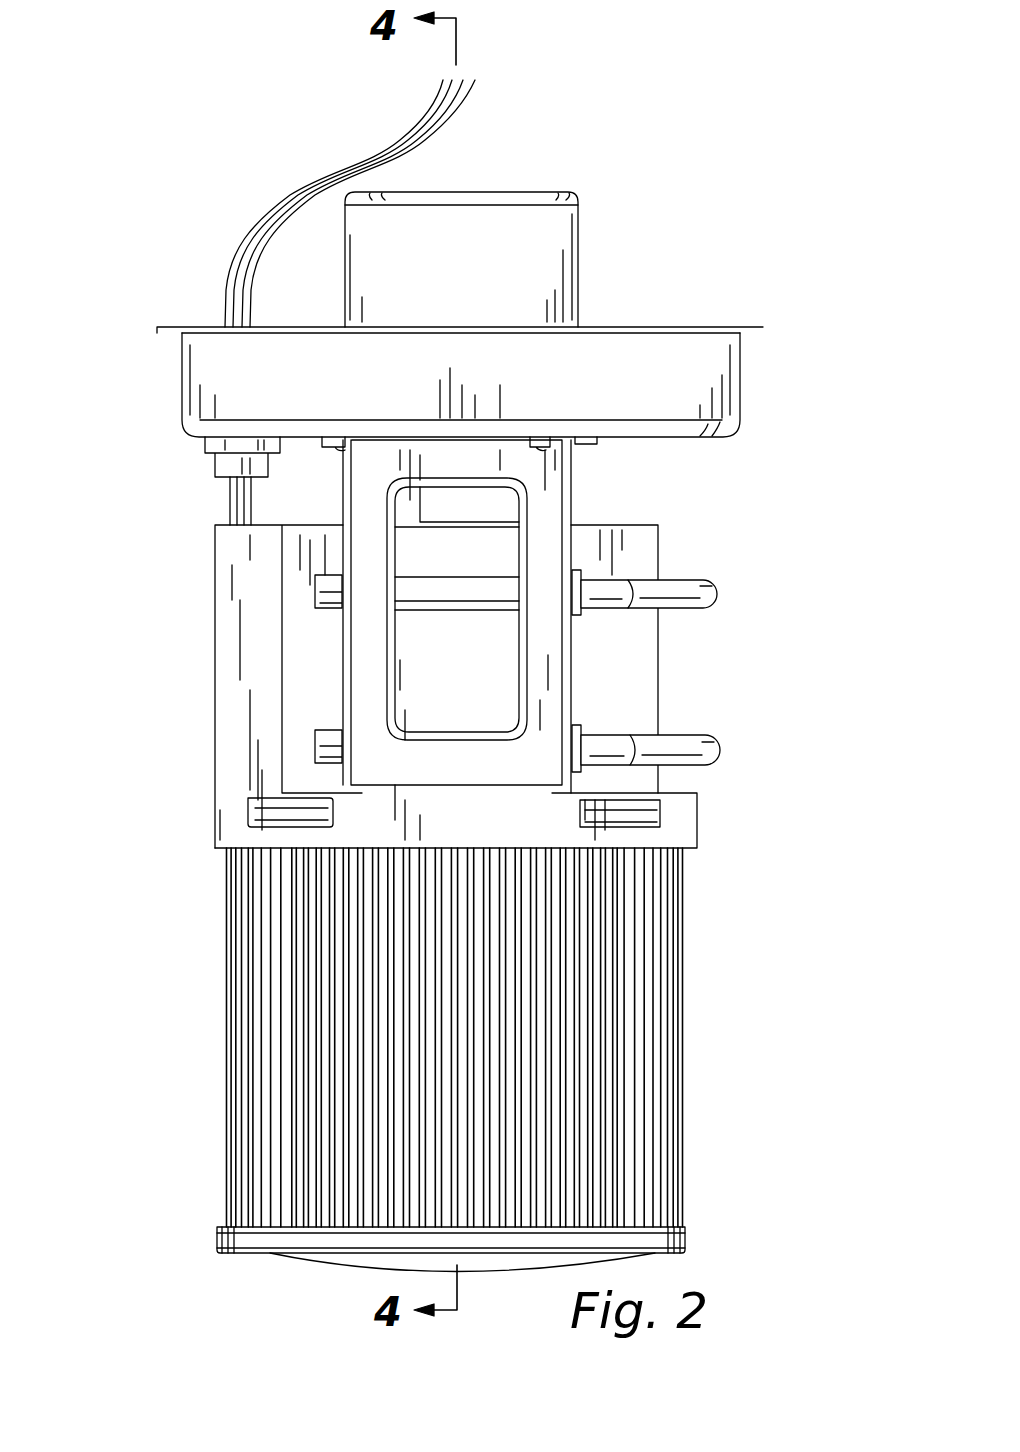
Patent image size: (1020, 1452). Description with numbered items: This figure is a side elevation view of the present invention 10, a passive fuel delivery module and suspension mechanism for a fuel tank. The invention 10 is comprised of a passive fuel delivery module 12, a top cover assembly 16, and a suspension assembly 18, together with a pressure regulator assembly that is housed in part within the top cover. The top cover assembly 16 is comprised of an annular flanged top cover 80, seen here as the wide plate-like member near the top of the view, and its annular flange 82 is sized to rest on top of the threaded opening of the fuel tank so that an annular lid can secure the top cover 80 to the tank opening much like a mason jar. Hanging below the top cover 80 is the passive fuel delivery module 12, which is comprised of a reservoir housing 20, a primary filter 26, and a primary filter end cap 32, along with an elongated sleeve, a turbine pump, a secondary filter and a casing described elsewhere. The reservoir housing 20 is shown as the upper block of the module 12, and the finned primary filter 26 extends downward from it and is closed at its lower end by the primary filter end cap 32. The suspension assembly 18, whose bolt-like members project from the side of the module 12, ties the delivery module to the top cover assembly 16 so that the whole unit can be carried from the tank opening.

The present invention 10 is at (684, 276).
The passive fuel delivery module 12 is at (202, 711).
The top cover assembly 16 is at (211, 327).
The suspension assembly 18 is at (717, 573).
The reservoir housing 20 is at (643, 667).
The primary filter 26 is at (258, 1100).
The primary filter end cap 32 is at (322, 1238).
The annular flanged top cover 80 is at (195, 380).
The annular flange 82 is at (164, 332).